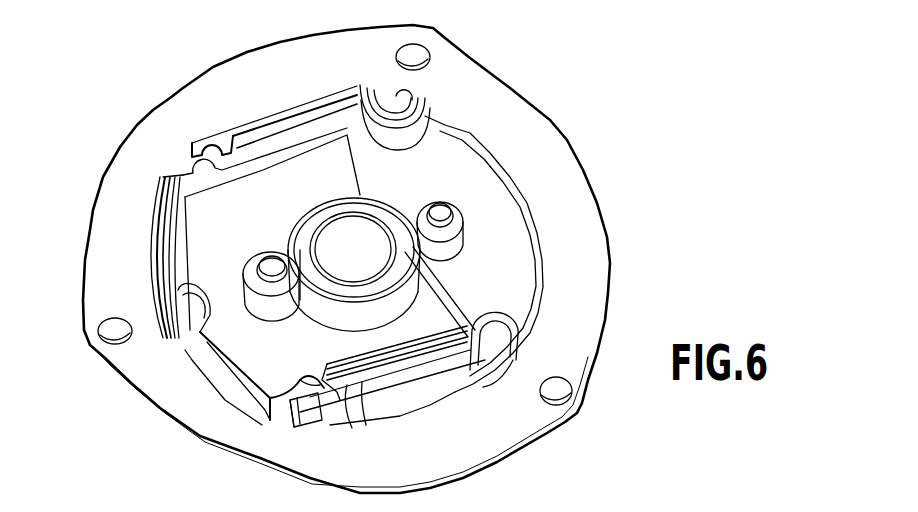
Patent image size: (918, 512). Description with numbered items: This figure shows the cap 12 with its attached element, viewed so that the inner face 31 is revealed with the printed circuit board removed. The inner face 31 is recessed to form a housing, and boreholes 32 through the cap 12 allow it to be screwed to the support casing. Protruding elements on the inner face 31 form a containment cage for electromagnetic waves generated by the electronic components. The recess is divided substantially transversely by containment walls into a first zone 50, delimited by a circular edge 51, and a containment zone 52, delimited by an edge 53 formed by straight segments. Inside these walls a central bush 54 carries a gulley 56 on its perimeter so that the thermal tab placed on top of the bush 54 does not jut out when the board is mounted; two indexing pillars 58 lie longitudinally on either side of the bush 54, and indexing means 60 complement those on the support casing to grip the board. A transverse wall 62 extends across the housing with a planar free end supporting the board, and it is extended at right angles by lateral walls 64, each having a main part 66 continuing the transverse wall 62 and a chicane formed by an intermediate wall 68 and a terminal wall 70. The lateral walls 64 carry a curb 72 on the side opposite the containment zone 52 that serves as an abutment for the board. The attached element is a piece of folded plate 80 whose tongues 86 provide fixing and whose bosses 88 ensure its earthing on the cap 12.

The cap 12 is at (160, 430).
The inner face 31 is at (133, 220).
The boreholes 32 is at (415, 57).
The first zone 50 is at (452, 172).
The circular edge 51 is at (492, 152).
The containment zone 52 is at (250, 242).
The edge 53 is at (163, 188).
The central bush 54 is at (357, 327).
The gulley 56 is at (367, 283).
The indexing pillars 58 is at (462, 233).
The indexing means 60 is at (372, 85).
The transverse wall 62 is at (448, 298).
The lateral walls 64 is at (400, 373).
The main part 66 is at (428, 363).
The intermediate wall 68 is at (354, 388).
The terminal wall 70 is at (320, 418).
The curb 72 is at (210, 142).
The piece of folded plate 80 is at (247, 393).
The tongues 86 is at (306, 376).
The bosses 88 is at (192, 360).